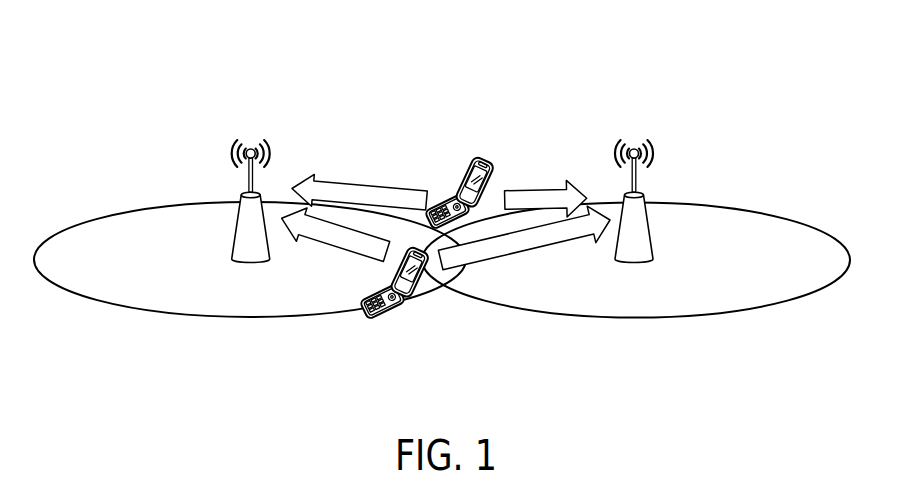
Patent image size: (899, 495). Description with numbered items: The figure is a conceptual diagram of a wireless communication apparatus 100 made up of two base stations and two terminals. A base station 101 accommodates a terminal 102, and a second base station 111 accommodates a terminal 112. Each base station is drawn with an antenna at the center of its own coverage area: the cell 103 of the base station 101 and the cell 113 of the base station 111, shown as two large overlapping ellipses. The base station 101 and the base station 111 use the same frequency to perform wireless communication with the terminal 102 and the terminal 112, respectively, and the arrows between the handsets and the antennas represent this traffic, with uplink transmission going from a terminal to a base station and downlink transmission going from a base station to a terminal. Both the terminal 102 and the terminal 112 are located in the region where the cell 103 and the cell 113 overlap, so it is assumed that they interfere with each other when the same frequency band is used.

The wireless communication apparatus 100 is at (645, 68).
The base station 101 is at (660, 153).
The terminal 102 is at (481, 161).
The cell 103 is at (638, 320).
The base station 111 is at (227, 151).
The terminal 112 is at (382, 323).
The cell 113 is at (236, 318).